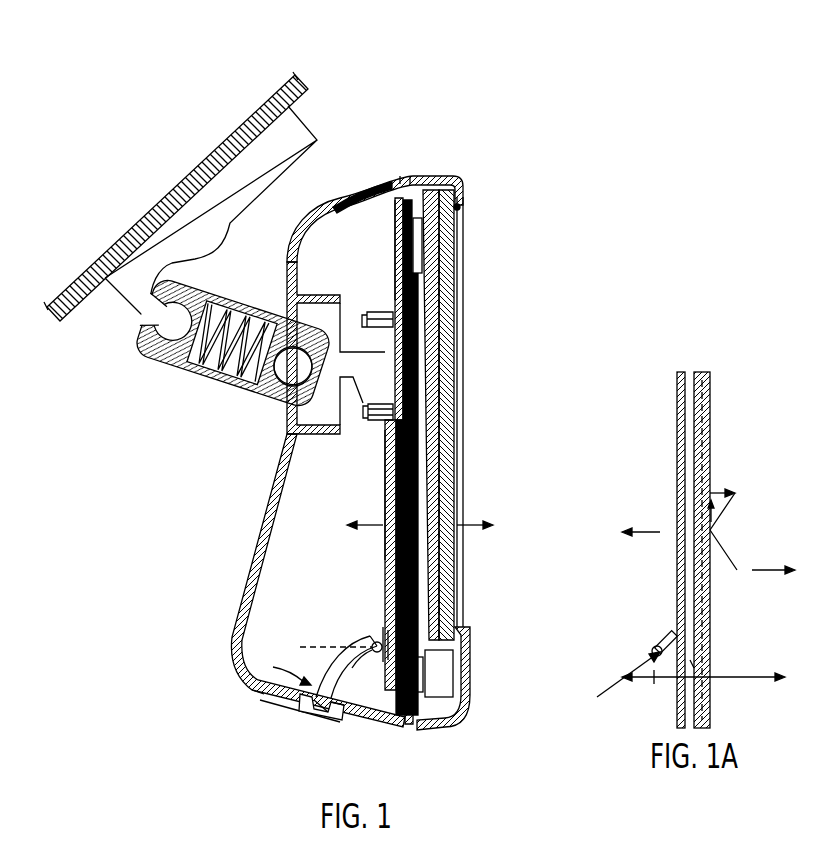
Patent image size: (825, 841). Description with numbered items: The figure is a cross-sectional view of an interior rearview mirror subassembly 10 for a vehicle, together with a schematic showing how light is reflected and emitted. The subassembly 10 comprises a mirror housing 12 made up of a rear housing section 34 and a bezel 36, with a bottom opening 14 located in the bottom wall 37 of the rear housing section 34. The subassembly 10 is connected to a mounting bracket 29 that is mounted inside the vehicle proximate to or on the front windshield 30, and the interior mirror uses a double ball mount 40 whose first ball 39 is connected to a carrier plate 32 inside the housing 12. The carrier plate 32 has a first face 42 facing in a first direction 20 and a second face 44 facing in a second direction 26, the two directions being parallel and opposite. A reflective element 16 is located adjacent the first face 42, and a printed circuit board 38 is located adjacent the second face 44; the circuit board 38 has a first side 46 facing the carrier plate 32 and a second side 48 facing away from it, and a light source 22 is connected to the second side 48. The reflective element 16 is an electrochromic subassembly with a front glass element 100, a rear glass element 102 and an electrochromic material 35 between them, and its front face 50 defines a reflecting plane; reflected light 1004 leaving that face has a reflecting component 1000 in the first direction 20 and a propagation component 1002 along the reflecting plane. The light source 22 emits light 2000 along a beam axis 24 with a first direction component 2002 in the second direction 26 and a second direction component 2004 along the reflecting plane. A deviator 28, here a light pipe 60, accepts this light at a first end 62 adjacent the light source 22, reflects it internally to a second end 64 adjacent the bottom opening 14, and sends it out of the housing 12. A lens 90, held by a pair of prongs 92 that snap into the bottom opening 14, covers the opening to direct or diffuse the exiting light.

In FIG. 1, the rearview mirror subassembly 10 is at (538, 172).
In FIG. 1, the mirror housing 12 is at (427, 173).
In FIG. 1, the bottom opening 14 is at (305, 716).
In FIG. 1, the reflective element 16 is at (467, 415).
In FIG. 1A, the reflective element 16 is at (731, 550).
In FIG. 1, the first direction 20 is at (474, 525).
In FIG. 1A, the first direction 20 is at (774, 570).
In FIG. 1, the light source 22 is at (374, 631).
In FIG. 1, the beam axis 24 is at (325, 645).
In FIG. 1A, the beam axis 24 is at (612, 680).
In FIG. 1, the second direction 26 is at (366, 528).
In FIG. 1A, the second direction 26 is at (650, 534).
In FIG. 1, the deviator 28 is at (285, 664).
In FIG. 1, the mounting bracket 29 is at (307, 118).
In FIG. 1, the front windshield 30 is at (78, 312).
In FIG. 1, the carrier plate 32 is at (449, 457).
In FIG. 1, the rear housing section 34 is at (237, 628).
In FIG. 1, the electrochromic material 35 is at (440, 252).
In FIG. 1, the bezel 36 is at (440, 728).
In FIG. 1, the bottom wall 37 is at (280, 716).
In FIG. 1, the printed circuit board 38 is at (377, 444).
In FIG. 1A, the printed circuit board 38 is at (676, 402).
In FIG. 1, the first ball 39 is at (272, 402).
In FIG. 1, the double ball mount 40 is at (231, 366).
In FIG. 1, the first face 42 is at (420, 408).
In FIG. 1, the second face 44 is at (394, 237).
In FIG. 1, the first side 46 is at (419, 458).
In FIG. 1, the second side 48 is at (385, 466).
In FIG. 1, the front face 50 is at (456, 310).
In FIG. 1A, the front face 50 is at (712, 600).
In FIG. 1, the light pipe 60 is at (327, 665).
In FIG. 1, the first end 62 is at (362, 658).
In FIG. 1, the second end 64 is at (326, 705).
In FIG. 1, the lens 90 is at (334, 722).
In FIG. 1, the prongs 92 is at (263, 705).
In FIG. 1, the front glass element 100 is at (456, 583).
In FIG. 1, the rear glass element 102 is at (450, 604).
In FIG. 1A, the reflecting component 1000 is at (712, 491).
In FIG. 1A, the propagation component 1002 is at (707, 520).
In FIG. 1A, the light 1004 is at (726, 507).
In FIG. 1A, the light 2000 is at (652, 650).
In FIG. 1A, the first direction component 2002 is at (654, 684).
In FIG. 1A, the second direction component 2004 is at (680, 667).